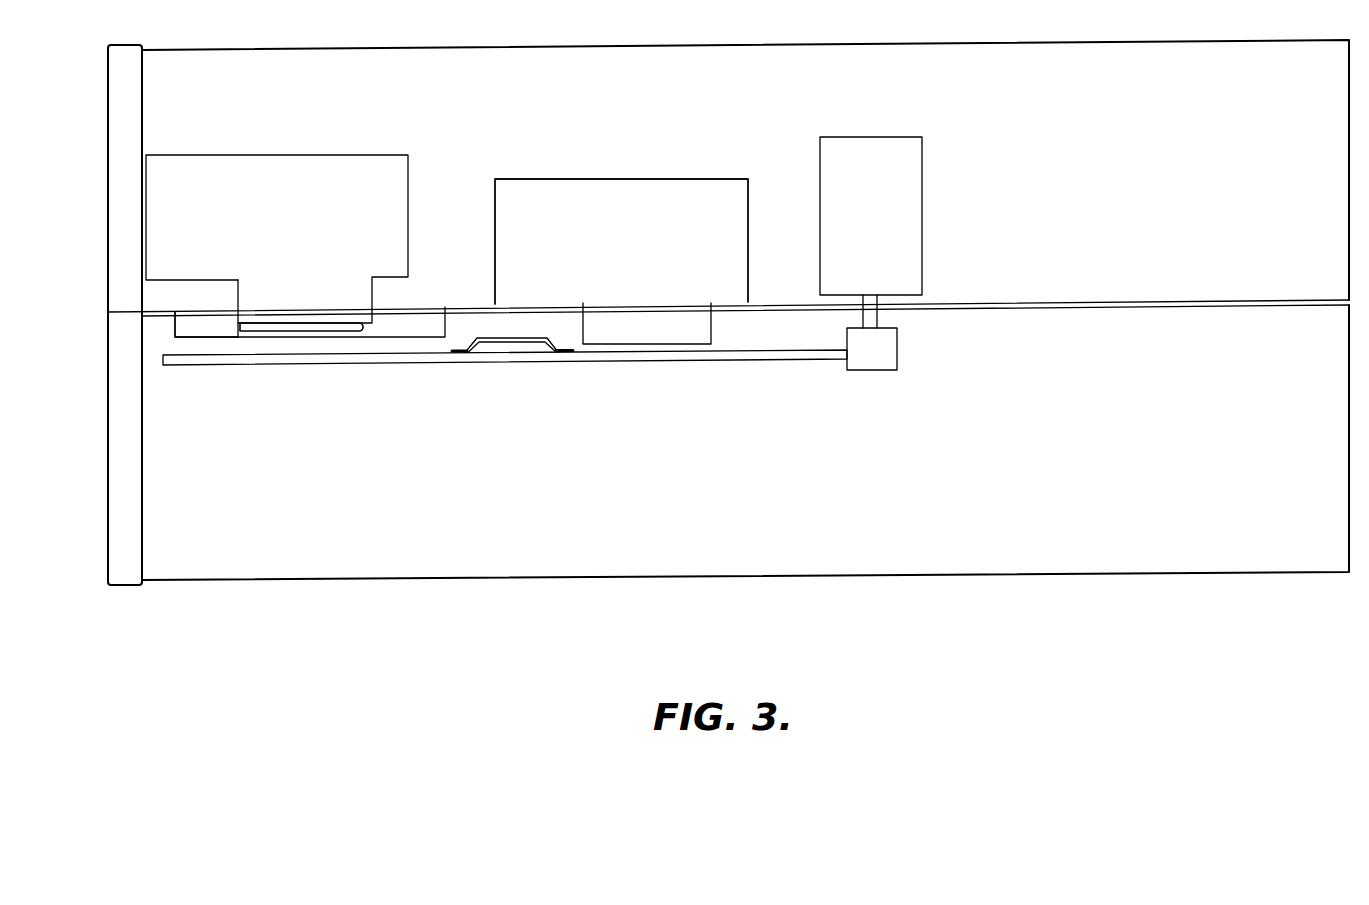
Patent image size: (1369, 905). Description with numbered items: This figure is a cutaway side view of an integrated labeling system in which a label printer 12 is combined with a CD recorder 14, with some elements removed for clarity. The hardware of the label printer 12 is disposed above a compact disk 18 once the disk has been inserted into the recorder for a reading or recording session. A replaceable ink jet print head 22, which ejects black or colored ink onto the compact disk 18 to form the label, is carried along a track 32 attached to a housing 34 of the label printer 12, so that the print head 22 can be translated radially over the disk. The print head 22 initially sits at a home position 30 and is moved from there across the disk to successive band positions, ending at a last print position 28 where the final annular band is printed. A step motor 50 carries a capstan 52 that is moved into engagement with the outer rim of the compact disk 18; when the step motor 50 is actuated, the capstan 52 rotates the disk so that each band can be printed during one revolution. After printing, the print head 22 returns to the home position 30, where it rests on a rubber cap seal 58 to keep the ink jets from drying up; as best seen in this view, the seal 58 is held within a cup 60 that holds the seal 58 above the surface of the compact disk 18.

The label printer 12 is at (122, 97).
The CD recorder 14 is at (118, 558).
The compact disk 18 is at (408, 357).
The print head 22 is at (738, 226).
The last print position 28 is at (602, 190).
The home position 30 is at (400, 168).
The track 32 is at (1082, 305).
The housing 34 is at (232, 50).
The step motor 50 is at (912, 210).
The capstan 52 is at (885, 351).
The rubber cap seal 58 is at (237, 333).
The cup 60 is at (175, 327).